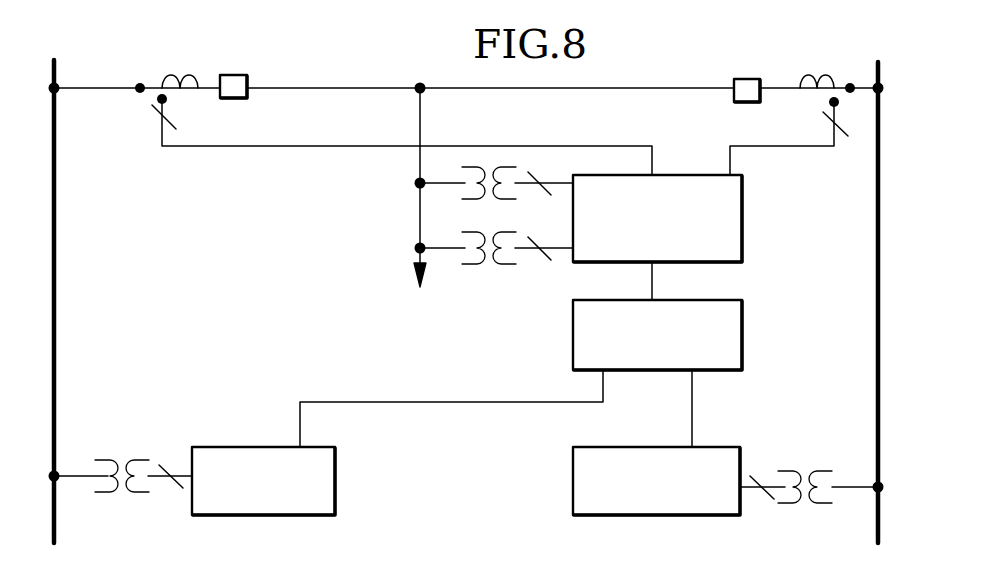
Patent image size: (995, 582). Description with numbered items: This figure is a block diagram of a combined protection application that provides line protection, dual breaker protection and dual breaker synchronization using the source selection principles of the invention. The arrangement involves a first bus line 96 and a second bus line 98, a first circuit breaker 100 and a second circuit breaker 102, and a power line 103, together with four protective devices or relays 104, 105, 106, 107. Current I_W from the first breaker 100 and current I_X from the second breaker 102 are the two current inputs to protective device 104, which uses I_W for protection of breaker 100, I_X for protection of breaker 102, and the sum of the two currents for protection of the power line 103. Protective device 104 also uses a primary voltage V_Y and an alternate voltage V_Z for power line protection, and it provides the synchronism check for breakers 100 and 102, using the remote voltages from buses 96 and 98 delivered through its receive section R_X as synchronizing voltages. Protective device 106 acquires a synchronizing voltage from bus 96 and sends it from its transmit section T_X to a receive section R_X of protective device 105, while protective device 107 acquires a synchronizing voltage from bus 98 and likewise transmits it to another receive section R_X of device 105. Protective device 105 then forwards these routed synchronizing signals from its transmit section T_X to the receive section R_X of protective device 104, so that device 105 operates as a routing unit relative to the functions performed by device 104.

The first bus line 96 is at (56, 215).
The second bus line 98 is at (876, 256).
The first circuit breaker 100 is at (245, 74).
The second circuit breaker 102 is at (752, 78).
The power line 103 is at (418, 157).
The protective device 104 is at (743, 192).
The protective device 105 is at (743, 322).
The protective device 106 is at (336, 460).
The protective device 107 is at (600, 516).